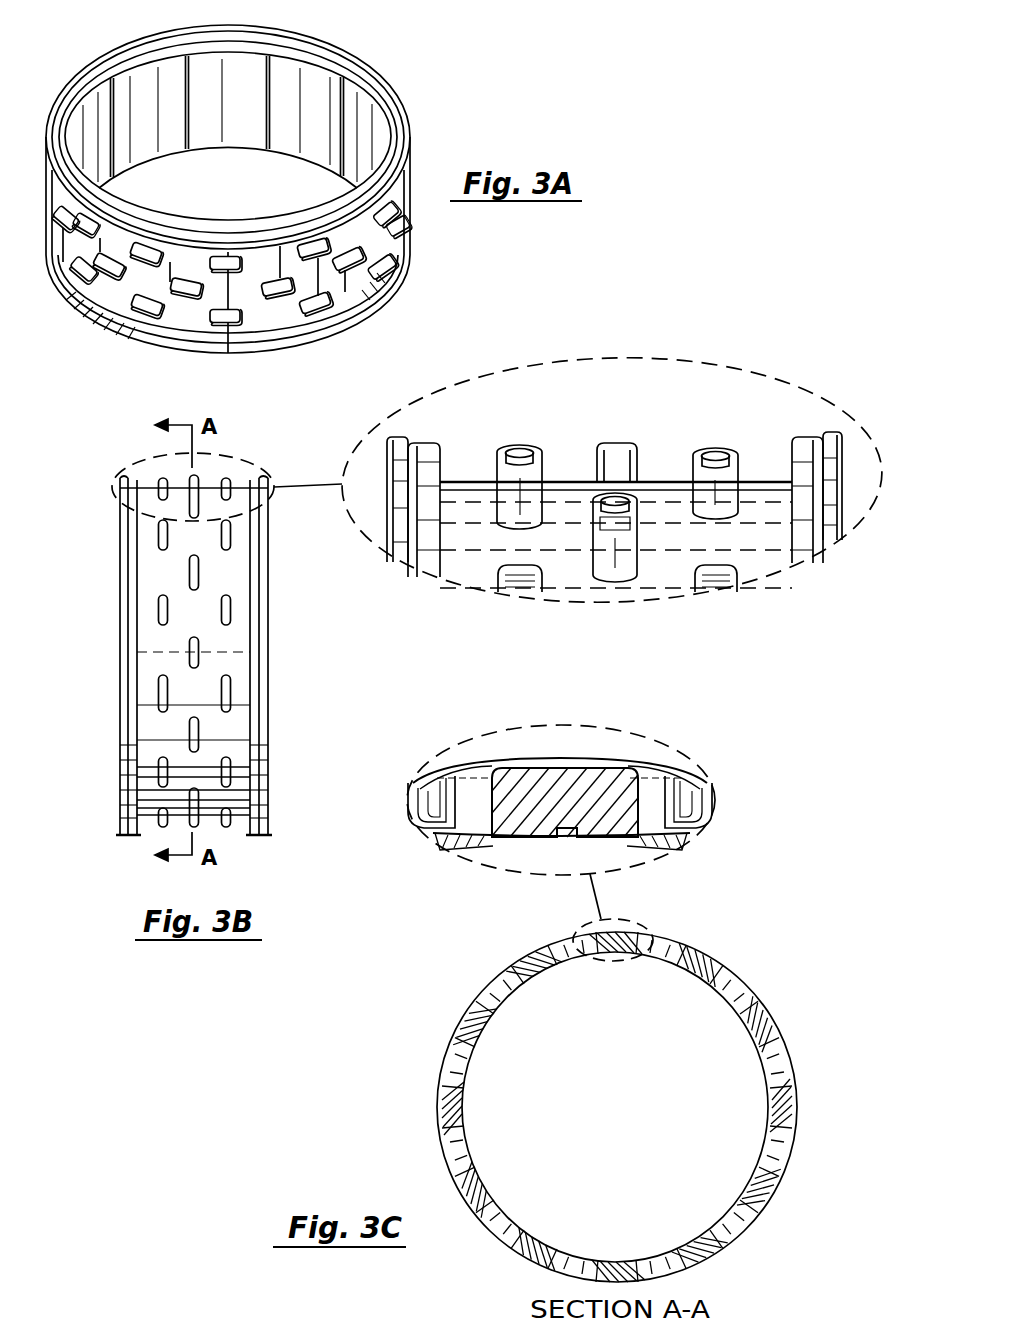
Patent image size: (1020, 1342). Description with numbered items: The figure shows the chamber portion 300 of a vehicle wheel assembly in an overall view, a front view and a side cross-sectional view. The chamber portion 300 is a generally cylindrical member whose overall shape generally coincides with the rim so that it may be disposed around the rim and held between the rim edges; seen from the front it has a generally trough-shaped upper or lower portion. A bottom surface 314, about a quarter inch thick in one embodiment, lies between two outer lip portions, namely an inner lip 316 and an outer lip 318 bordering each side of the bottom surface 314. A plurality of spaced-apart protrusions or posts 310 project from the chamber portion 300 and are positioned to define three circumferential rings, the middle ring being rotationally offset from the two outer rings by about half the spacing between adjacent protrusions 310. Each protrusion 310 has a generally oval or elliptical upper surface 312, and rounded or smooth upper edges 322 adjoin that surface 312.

In FIG. 3A, the chamber portion 300 is at (400, 67).
In FIG. 3B, the protrusions 310 is at (527, 496).
In FIG. 3B, the upper surface 312 is at (716, 455).
In FIG. 3B, the bottom surface 314 is at (670, 502).
In FIG. 3B, the inner lip 316 is at (424, 440).
In FIG. 3B, the outer lip 318 is at (397, 437).
In FIG. 3B, the upper edges 322 is at (505, 450).